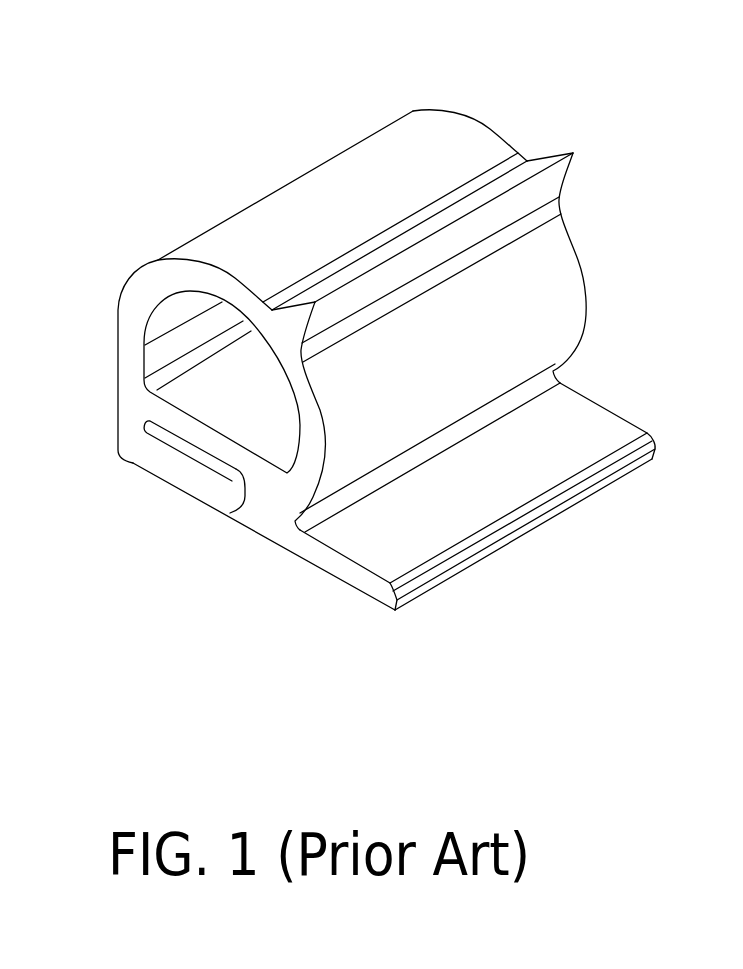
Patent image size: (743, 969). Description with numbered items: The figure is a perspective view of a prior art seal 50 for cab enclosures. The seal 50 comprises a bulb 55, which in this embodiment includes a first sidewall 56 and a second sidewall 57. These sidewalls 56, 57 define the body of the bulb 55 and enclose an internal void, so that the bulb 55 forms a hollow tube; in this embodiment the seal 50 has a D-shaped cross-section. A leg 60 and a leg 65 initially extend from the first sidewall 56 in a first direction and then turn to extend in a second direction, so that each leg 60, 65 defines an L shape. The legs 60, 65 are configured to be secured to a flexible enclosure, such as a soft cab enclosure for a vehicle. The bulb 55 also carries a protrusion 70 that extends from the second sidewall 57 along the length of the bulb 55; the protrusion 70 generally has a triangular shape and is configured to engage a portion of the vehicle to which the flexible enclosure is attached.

The seal 50 is at (143, 68).
The bulb 55 is at (292, 180).
The first sidewall 56 is at (217, 455).
The second sidewall 57 is at (130, 323).
The leg 60 is at (150, 510).
The leg 65 is at (538, 586).
The protrusion 70 is at (557, 183).